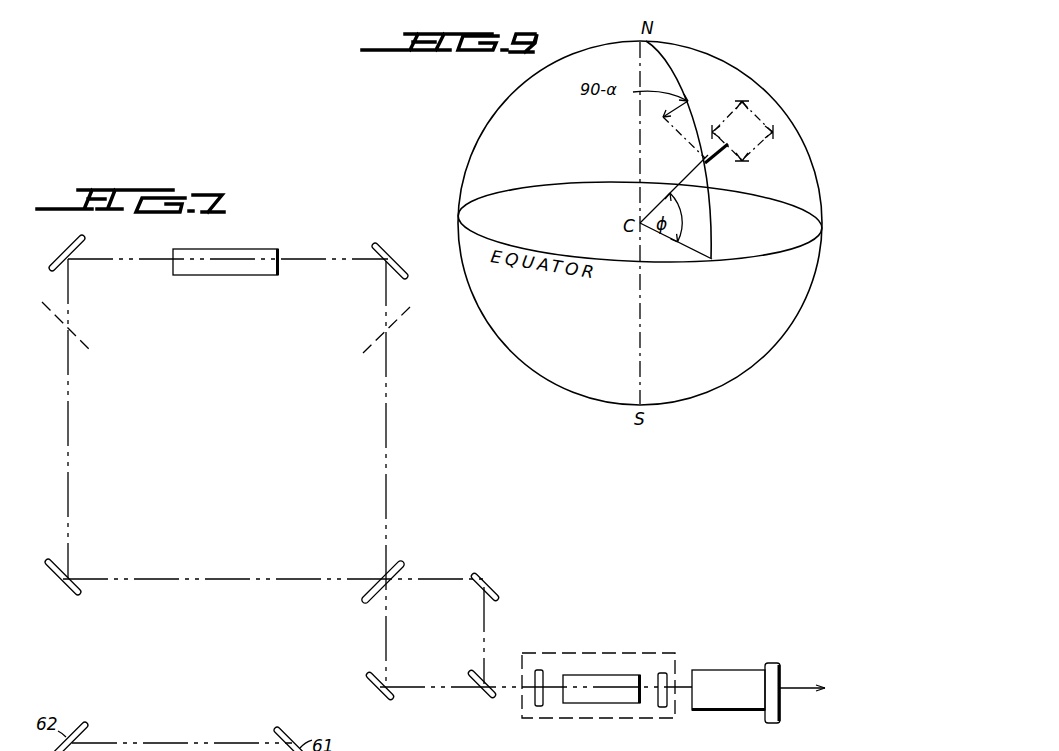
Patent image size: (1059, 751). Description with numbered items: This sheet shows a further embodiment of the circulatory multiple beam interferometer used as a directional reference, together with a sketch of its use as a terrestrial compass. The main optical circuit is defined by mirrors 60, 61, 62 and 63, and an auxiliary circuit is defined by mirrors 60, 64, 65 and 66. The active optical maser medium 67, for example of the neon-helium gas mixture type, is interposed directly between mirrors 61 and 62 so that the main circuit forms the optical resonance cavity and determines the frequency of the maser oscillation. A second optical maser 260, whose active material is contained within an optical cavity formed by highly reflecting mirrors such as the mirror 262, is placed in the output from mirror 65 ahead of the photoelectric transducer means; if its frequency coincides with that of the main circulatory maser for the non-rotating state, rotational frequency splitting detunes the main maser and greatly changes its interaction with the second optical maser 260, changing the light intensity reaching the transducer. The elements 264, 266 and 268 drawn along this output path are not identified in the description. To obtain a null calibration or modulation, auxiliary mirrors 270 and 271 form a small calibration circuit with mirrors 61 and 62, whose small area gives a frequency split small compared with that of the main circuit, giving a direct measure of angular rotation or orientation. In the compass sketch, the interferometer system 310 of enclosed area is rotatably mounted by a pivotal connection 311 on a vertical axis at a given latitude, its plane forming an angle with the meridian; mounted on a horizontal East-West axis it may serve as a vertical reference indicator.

In FIG. 7, the mirror 60 is at (400, 577).
In FIG. 7, the mirror 61 is at (410, 256).
In FIG. 7, the mirror 62 is at (63, 255).
In FIG. 7, the mirror 63 is at (58, 586).
In FIG. 7, the mirror 64 is at (491, 581).
In FIG. 7, the mirror 65 is at (475, 679).
In FIG. 7, the mirror 66 is at (369, 684).
In FIG. 7, the active optical maser medium 67 is at (217, 278).
In FIG. 7, the auxiliary mirror 270 is at (84, 346).
In FIG. 7, the auxiliary mirror 271 is at (394, 326).
In FIG. 7, the second optical maser 260 is at (590, 653).
In FIG. 7, the highly reflecting mirror 262 is at (538, 708).
In FIG. 7, the modulator crystal 264 is at (602, 706).
In FIG. 7, the analyzer 266 is at (661, 710).
In FIG. 7, the detector 268 is at (720, 713).
In FIG. 9, the system 310 is at (748, 124).
In FIG. 9, the pivotal connection 311 is at (716, 163).